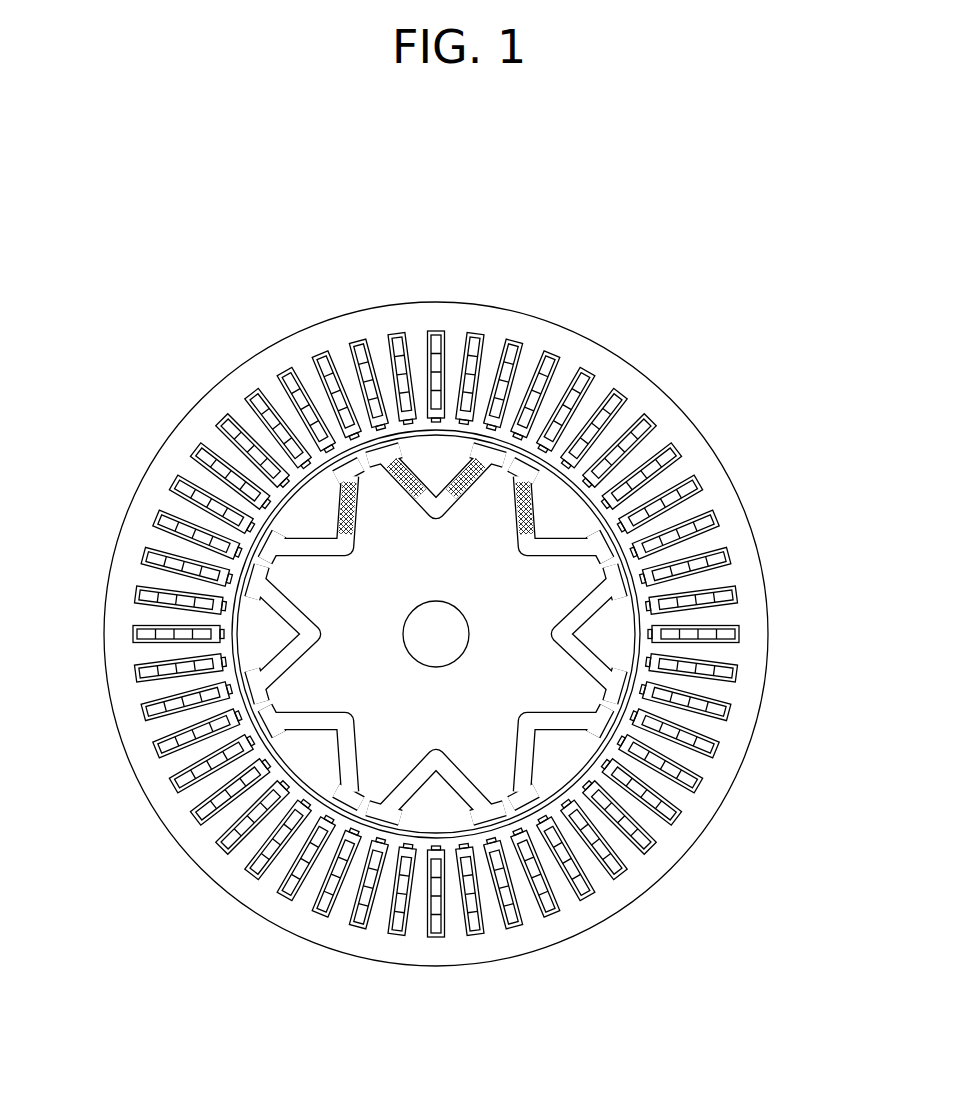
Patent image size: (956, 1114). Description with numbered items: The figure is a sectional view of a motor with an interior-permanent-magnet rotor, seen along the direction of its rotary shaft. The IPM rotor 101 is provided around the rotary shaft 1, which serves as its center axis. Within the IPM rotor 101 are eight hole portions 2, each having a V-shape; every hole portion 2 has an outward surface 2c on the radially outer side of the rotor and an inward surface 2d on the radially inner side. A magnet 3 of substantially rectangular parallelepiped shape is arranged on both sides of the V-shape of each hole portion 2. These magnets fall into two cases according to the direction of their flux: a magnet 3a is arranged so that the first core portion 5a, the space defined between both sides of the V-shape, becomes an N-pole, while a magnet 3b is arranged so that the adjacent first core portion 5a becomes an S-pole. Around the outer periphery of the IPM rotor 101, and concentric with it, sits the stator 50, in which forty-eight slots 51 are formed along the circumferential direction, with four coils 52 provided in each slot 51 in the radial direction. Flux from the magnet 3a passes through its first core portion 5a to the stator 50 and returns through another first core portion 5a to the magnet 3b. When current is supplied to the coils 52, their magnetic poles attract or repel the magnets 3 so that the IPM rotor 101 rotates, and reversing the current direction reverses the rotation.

The rotary shaft 1 is at (437, 655).
The hole portion 2 is at (288, 607).
The outward surface 2c is at (290, 637).
The inward surface 2d is at (263, 573).
The magnet 3 is at (385, 381).
The magnet 3a is at (333, 472).
The magnet 3b is at (404, 450).
The first core portion 5a is at (285, 517).
The stator 50 is at (607, 347).
The slot 51 is at (656, 440).
The coil 52 is at (628, 521).
The IPM rotor 101 is at (442, 530).